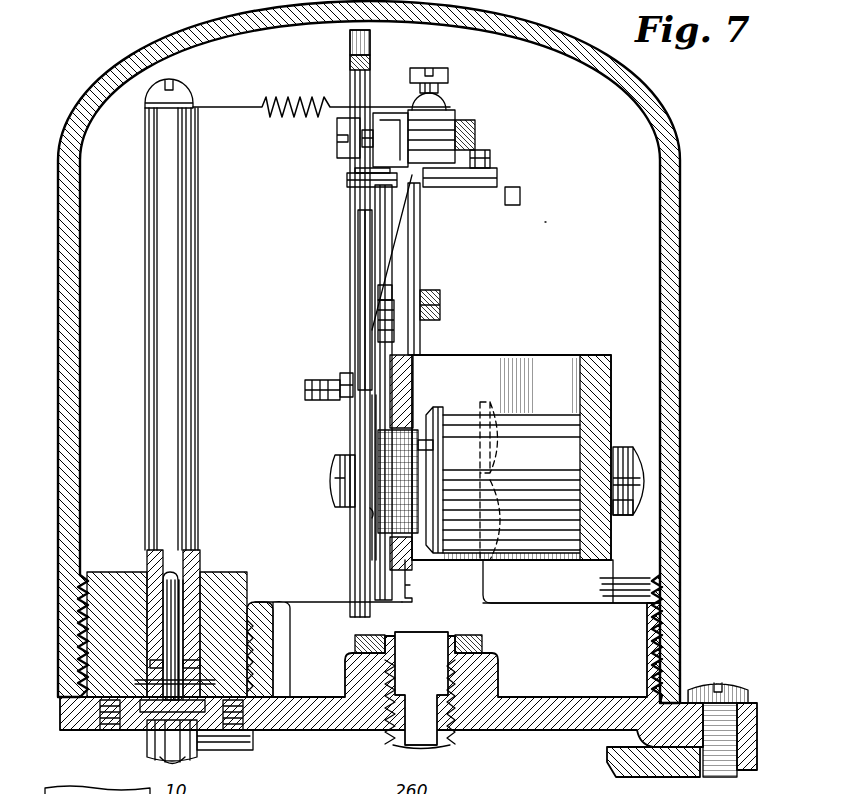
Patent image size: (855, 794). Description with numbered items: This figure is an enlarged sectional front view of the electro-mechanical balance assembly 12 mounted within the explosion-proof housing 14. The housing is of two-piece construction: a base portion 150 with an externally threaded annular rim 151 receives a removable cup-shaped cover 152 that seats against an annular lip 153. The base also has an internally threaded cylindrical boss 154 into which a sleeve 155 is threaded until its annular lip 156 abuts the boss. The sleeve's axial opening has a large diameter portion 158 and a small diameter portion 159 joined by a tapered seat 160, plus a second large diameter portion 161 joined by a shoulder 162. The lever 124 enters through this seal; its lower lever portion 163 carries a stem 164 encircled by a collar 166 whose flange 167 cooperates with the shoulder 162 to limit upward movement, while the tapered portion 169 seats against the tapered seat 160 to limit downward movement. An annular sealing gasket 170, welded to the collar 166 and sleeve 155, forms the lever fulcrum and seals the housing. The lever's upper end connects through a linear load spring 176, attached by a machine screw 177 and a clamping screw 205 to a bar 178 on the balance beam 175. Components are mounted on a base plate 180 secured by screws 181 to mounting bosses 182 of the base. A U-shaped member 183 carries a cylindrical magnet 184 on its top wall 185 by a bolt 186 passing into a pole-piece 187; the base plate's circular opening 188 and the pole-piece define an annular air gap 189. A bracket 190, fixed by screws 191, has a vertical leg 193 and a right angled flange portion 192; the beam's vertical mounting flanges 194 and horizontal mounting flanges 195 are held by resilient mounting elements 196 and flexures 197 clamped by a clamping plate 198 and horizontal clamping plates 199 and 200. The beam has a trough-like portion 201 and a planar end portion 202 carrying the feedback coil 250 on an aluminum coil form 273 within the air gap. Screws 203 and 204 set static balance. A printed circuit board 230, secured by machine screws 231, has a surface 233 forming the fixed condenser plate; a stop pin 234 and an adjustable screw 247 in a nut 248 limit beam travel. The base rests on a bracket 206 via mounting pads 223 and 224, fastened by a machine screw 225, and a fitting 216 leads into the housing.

The electro-mechanical balance assembly 12 is at (546, 222).
The explosion-proof housing 14 is at (683, 345).
The lever 124 is at (200, 425).
The base portion 150 is at (573, 690).
The annular rim 151 is at (598, 593).
The cup-shaped cover 152 is at (68, 355).
The annular lip 153 is at (66, 730).
The cylindrical boss 154 is at (282, 623).
The sleeve 155 is at (108, 575).
The annular lip 156 is at (78, 581).
The large diameter portion 158 is at (150, 610).
The small diameter portion 159 is at (150, 662).
The tapered seat 160 is at (160, 640).
The second large diameter portion 161 is at (117, 715).
The shoulder 162 is at (138, 680).
The lower lever portion 163 is at (180, 760).
The stem 164 is at (205, 600).
The collar 166 is at (190, 660).
The flange 167 is at (224, 715).
The tapered portion 169 is at (200, 650).
The annular sealing gasket 170 is at (147, 730).
The balance beam 175 is at (348, 268).
The linear load spring 176 is at (285, 97).
The machine screw 177 is at (194, 66).
The bar 178 is at (440, 130).
The base plate 180 is at (413, 380).
The screws 181 is at (496, 452).
The mounting bosses 182 is at (484, 578).
The U-shaped member 183 is at (582, 370).
The cylindrical magnet 184 is at (575, 445).
The top wall 185 is at (600, 395).
The bolt 186 is at (640, 506).
The pole-piece 187 is at (414, 558).
The circular opening 188 is at (400, 400).
The annular air gap 189 is at (441, 425).
The bracket 190 is at (421, 290).
The screws 191 is at (378, 330).
The right angled flange portion 192 is at (498, 186).
The vertical leg 193 is at (421, 225).
The vertical mounting flanges 194 is at (406, 140).
The horizontal mounting flanges 195 is at (355, 165).
The resilient mounting elements 196 is at (410, 170).
The flexures 197 is at (472, 140).
The clamping plate 198 is at (358, 215).
The horizontal clamping plate 199 is at (491, 170).
The horizontal clamping plate 200 is at (347, 185).
The trough-like portion 201 is at (378, 286).
The planar end portion 202 is at (376, 455).
The large headed screw 203 is at (337, 128).
The screw 204 is at (418, 72).
The clamping screw 205 is at (440, 100).
The bracket 206 is at (640, 777).
The fitting 216 is at (460, 740).
The mounting pad 223 is at (255, 740).
The mounting pad 224 is at (760, 740).
The machine screw 225 is at (725, 690).
The printed circuit board 230 is at (362, 52).
The machine screws 231 is at (335, 463).
The surface 233 is at (370, 512).
The stop pin 234 is at (385, 560).
The adjustable screw 247 is at (325, 385).
The nut 248 is at (345, 373).
The feedback coil 250 is at (405, 470).
The coil form 273 is at (420, 445).